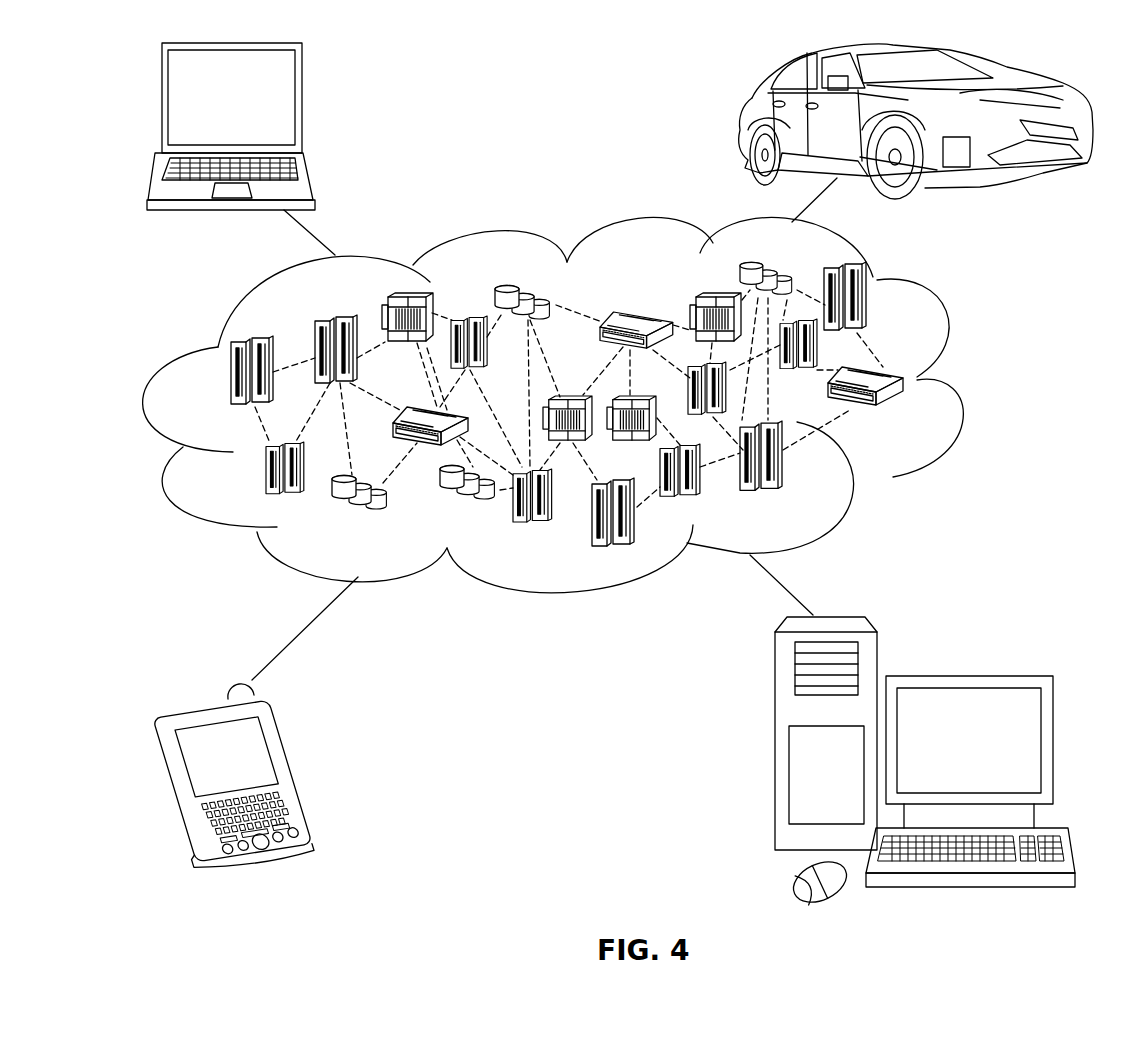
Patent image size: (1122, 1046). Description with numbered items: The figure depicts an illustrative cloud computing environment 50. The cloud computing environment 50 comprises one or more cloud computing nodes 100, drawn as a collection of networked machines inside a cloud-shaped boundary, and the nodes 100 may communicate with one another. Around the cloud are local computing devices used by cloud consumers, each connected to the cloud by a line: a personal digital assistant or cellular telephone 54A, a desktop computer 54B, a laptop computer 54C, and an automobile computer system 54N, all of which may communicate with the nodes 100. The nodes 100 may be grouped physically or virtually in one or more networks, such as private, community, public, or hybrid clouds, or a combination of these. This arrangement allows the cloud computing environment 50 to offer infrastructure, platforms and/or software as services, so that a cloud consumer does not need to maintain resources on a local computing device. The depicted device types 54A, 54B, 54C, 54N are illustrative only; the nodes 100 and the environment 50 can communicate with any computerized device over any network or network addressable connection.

The cloud computing environment 50 is at (963, 381).
The cloud computing nodes 100 is at (908, 413).
The personal digital assistant (PDA) or cellular telephone 54A is at (291, 771).
The desktop computer 54B is at (966, 675).
The laptop computer 54C is at (302, 106).
The automobile computer system 54N is at (742, 121).